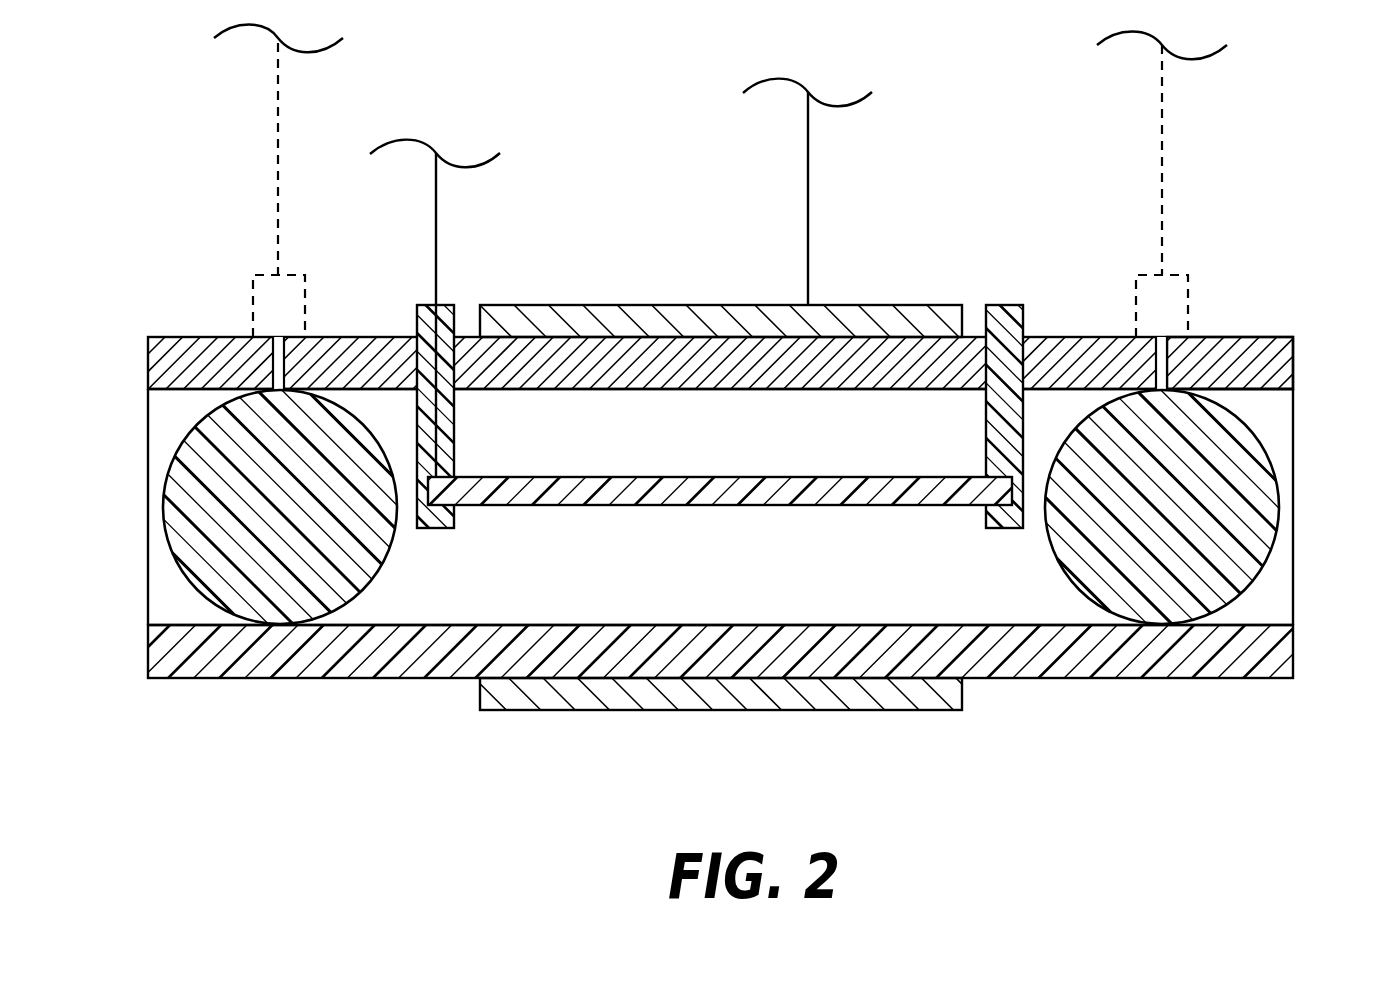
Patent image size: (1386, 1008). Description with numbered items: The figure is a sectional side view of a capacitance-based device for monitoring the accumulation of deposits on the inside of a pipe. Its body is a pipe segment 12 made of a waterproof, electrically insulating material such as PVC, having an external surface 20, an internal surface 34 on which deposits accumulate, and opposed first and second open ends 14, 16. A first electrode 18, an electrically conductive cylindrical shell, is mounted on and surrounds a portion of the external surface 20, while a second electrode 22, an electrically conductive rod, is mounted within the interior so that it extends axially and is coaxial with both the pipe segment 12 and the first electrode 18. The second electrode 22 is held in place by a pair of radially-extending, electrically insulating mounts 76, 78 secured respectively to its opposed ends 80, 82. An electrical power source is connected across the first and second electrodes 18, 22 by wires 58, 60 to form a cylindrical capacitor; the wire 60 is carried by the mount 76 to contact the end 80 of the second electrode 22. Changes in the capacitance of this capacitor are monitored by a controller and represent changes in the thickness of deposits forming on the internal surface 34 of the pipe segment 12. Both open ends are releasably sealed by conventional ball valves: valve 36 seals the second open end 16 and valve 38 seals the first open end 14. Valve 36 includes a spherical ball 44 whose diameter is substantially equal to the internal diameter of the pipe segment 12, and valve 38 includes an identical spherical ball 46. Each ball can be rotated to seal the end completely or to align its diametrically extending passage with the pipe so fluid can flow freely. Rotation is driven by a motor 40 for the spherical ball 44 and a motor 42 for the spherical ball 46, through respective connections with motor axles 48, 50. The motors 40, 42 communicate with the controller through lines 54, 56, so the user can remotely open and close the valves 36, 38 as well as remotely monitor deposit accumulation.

The pipe segment 12 is at (170, 337).
The first open end 14 is at (126, 433).
The second open end 16 is at (1313, 433).
The first electrode 18 is at (553, 305).
The external surface 20 is at (1250, 337).
The second electrode 22 is at (662, 505).
The inner surface 34 is at (832, 390).
The valve 36 is at (1286, 548).
The valve 38 is at (157, 550).
The motor 40 is at (1190, 275).
The motor 42 is at (290, 296).
The spherical ball 44 is at (1268, 500).
The spherical ball 46 is at (173, 493).
The motor axle 48 is at (1164, 372).
The motor axle 50 is at (276, 372).
The line 54 is at (1162, 133).
The line 56 is at (278, 108).
The wire 58 is at (808, 178).
The wire 60 is at (436, 200).
The radially-extending mount 76 is at (455, 425).
The radially-extending mount 78 is at (985, 431).
The end of second electrode 80 is at (470, 517).
The end of second electrode 82 is at (970, 515).